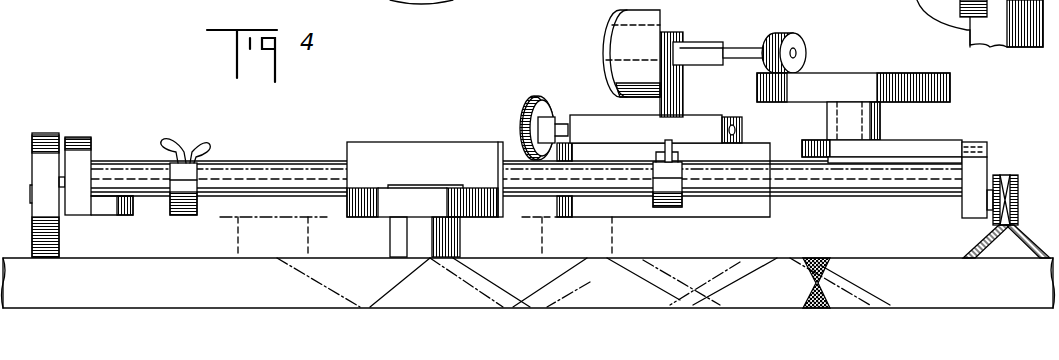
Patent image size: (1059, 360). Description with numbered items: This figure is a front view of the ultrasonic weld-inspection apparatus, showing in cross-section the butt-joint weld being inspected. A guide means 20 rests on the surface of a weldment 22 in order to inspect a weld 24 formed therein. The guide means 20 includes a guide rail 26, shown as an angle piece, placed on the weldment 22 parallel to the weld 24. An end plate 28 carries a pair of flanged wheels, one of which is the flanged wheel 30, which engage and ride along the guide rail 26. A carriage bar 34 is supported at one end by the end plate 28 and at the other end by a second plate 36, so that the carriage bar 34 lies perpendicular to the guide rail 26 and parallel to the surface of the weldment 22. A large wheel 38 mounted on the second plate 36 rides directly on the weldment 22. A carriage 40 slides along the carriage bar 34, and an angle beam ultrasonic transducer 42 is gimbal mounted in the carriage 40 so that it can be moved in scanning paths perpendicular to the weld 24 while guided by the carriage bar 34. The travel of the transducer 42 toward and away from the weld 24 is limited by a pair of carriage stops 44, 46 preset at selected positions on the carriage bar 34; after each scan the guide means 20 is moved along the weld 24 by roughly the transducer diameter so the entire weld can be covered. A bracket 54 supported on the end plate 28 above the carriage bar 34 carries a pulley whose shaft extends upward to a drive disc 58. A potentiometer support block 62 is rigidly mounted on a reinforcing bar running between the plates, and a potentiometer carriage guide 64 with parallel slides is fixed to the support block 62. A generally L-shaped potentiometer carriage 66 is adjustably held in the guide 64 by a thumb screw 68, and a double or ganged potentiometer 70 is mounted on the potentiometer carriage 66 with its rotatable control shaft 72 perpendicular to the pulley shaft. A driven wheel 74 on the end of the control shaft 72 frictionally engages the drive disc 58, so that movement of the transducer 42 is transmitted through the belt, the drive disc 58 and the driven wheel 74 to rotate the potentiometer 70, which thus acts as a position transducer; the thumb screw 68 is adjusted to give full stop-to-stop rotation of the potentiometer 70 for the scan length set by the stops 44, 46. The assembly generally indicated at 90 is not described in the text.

The guide means 20 is at (447, 103).
The weldment 22 is at (95, 272).
The weld 24 is at (813, 257).
The guide rail 26 is at (982, 242).
The end plate 28 is at (975, 147).
The flanged wheel 30 is at (1021, 190).
The carriage bar 34 is at (262, 175).
The second plate 36 is at (77, 150).
The large wheel 38 is at (45, 137).
The carriage 40 is at (377, 140).
The angle beam ultrasonic transducer 42 is at (245, 237).
The carriage stop 44 is at (183, 185).
The carriage stop 46 is at (668, 185).
The bracket 54 is at (902, 147).
The drive disc 58 is at (857, 85).
The potentiometer support block 62 is at (715, 210).
The potentiometer carriage guide 64 is at (595, 115).
The potentiometer carriage 66 is at (680, 104).
The thumb screw 68 is at (525, 113).
The ganged potentiometer 70 is at (617, 38).
The control shaft 72 is at (740, 48).
The driven wheel 74 is at (798, 42).
The grinding wheel assembly 90 is at (962, 98).